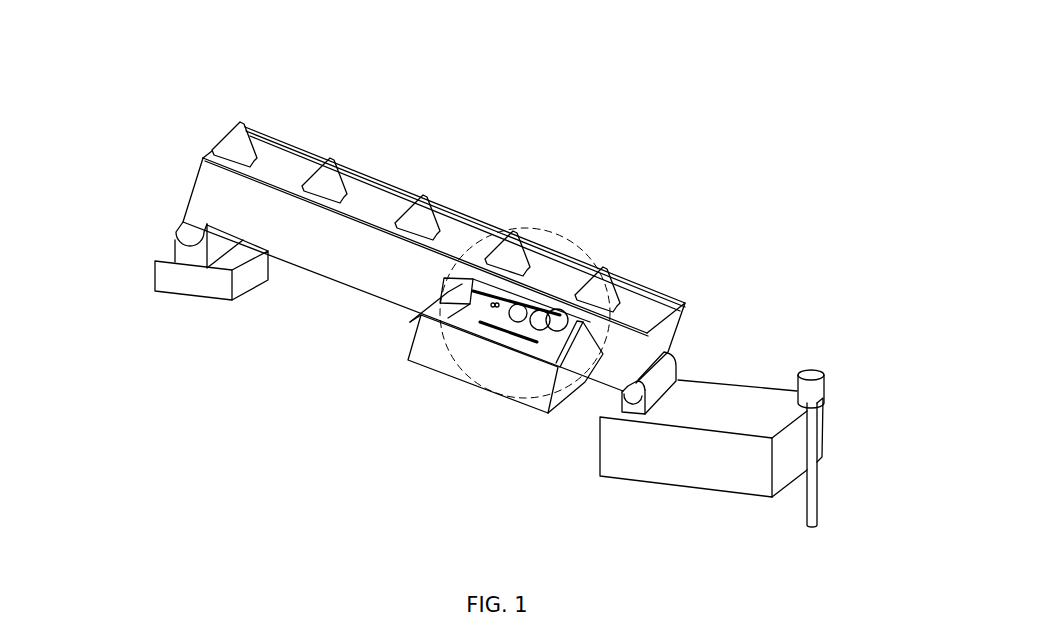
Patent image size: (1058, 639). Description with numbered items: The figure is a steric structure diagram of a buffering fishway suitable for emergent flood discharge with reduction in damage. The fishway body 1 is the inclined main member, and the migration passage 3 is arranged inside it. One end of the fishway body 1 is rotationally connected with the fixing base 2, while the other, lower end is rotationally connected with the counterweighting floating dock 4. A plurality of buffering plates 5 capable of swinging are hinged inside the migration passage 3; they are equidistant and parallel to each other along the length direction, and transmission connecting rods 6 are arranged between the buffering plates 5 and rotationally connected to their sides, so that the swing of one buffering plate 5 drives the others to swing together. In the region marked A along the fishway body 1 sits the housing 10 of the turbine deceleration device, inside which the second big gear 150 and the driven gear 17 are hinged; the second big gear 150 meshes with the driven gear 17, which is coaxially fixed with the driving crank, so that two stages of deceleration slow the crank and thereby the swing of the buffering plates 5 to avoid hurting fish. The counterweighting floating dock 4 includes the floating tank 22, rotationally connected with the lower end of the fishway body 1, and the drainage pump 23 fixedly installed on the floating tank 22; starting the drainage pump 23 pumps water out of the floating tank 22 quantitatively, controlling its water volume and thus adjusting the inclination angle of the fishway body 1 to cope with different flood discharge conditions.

The fishway body 1 is at (242, 208).
The fixing base 2 is at (155, 272).
The migration passage 3 is at (283, 185).
The counterweighting floating dock 4 is at (599, 466).
The buffering plate 5 is at (233, 126).
The transmission connecting rod 6 is at (377, 185).
The housing 10 is at (450, 378).
The driven gear 17 is at (523, 307).
The second big gear 150 is at (548, 320).
The floating tank 22 is at (735, 468).
The drainage pump 23 is at (827, 375).
The detail region A is at (438, 320).